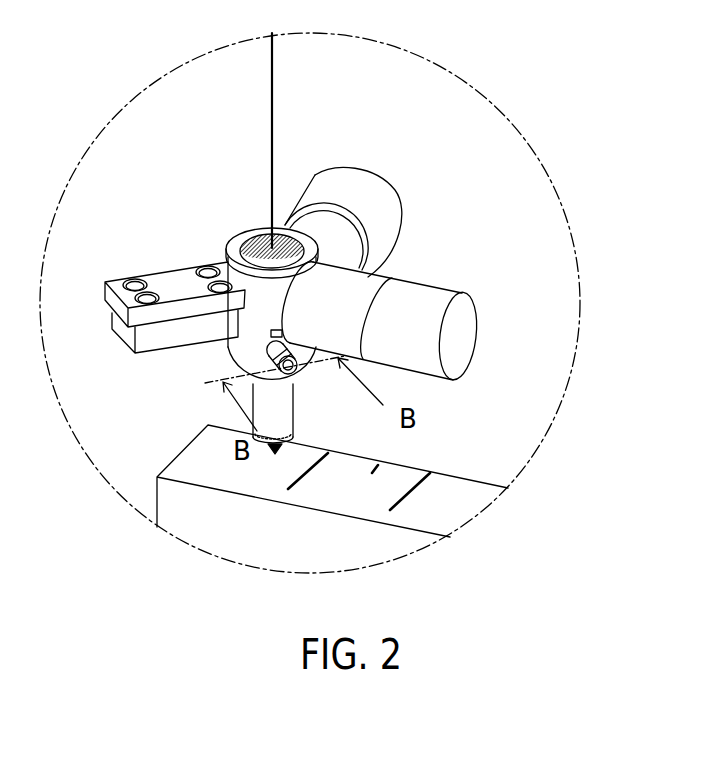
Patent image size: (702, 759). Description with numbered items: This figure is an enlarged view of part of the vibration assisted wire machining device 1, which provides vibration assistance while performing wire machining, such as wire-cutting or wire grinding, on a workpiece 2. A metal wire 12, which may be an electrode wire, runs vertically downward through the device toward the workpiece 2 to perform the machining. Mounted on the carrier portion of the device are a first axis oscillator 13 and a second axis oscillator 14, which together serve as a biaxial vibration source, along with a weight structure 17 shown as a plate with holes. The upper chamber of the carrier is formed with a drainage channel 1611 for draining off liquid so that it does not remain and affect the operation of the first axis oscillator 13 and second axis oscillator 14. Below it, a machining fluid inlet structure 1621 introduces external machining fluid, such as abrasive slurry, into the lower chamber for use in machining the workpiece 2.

The vibration assisted wire machining device 1 is at (129, 64).
The metal wire 12 is at (273, 95).
The first axis oscillator 13 is at (423, 293).
The second axis oscillator 14 is at (348, 183).
The weight structure 17 is at (173, 272).
The drainage channel 1611 is at (272, 336).
The machining fluid inlet structure 1621 is at (302, 364).
The workpiece 2 is at (450, 485).